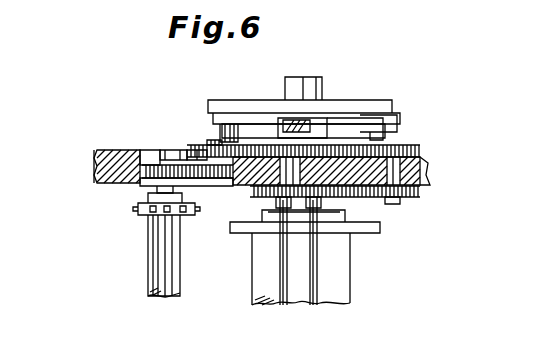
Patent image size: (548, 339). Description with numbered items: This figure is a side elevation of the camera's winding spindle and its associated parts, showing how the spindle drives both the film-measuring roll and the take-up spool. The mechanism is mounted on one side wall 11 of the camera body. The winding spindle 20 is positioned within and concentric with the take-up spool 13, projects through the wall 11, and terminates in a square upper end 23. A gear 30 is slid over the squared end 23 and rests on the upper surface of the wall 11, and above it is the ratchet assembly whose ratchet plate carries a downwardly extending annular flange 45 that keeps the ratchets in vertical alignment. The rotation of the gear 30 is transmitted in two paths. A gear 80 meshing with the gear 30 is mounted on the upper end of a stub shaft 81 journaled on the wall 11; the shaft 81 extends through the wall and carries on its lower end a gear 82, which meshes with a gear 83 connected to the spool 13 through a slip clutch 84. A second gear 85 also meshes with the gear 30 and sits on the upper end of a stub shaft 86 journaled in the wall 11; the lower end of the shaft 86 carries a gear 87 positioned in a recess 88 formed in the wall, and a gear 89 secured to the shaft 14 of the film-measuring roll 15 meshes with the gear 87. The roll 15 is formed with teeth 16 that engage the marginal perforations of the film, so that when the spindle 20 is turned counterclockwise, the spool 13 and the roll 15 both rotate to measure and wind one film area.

The side wall 11 is at (436, 176).
The take-up spool 13 is at (340, 271).
The shaft 14 is at (152, 190).
The film-measuring roll 15 is at (173, 254).
The teeth 16 is at (135, 208).
The winding spindle 20 is at (346, 203).
The square upper end 23 is at (321, 97).
The gear 30 is at (217, 142).
The annular flange 45 is at (397, 132).
The gear 80 is at (424, 148).
The stub shaft 81 is at (428, 167).
The gear 82 is at (428, 190).
The gear 83 is at (346, 201).
The slip clutch 84 is at (265, 216).
The second gear 85 is at (190, 162).
The stub shaft 86 is at (215, 143).
The gear 87 is at (187, 150).
The recess 88 is at (198, 162).
The gear 89 is at (96, 160).